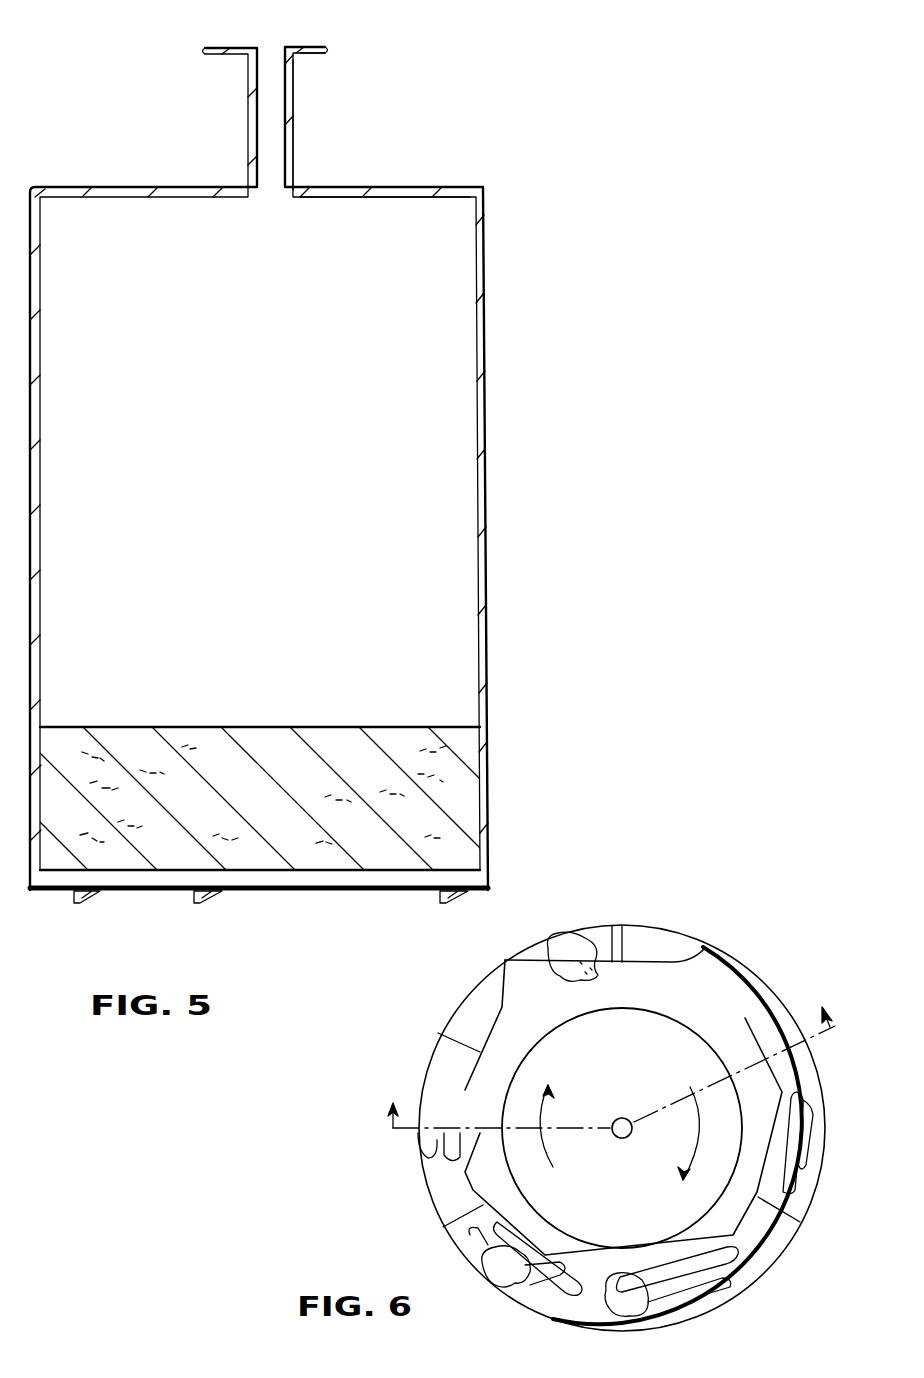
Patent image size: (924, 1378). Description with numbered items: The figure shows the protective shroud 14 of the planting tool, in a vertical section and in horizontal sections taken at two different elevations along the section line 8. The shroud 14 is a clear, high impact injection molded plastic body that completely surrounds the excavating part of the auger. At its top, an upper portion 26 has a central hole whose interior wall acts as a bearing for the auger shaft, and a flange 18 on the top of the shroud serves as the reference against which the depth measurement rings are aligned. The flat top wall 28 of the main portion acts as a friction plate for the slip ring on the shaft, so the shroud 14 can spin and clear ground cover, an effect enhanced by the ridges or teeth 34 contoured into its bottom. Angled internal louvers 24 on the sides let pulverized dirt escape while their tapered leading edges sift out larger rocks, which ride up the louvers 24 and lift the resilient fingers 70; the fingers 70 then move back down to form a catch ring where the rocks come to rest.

In FIG. 5, the shroud 14 is at (485, 297).
In FIG. 5, the flange 18 is at (300, 48).
In FIG. 5, the upper portion 26 is at (294, 134).
In FIG. 5, the top wall 28 is at (400, 187).
In FIG. 5, the internal louvers 24 is at (255, 857).
In FIG. 6, the internal louvers 24 is at (620, 926).
In FIG. 5, the ridges or teeth 34 is at (455, 898).
In FIG. 6, the section line 8- 8 is at (609, 1048).
In FIG. 6, the fingers 70 is at (810, 1128).